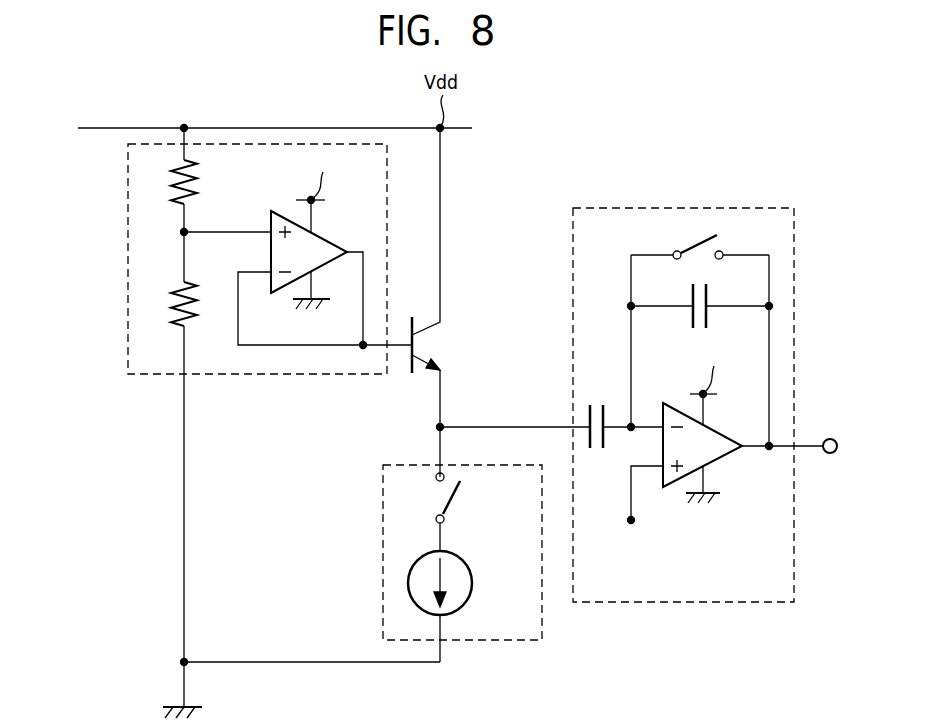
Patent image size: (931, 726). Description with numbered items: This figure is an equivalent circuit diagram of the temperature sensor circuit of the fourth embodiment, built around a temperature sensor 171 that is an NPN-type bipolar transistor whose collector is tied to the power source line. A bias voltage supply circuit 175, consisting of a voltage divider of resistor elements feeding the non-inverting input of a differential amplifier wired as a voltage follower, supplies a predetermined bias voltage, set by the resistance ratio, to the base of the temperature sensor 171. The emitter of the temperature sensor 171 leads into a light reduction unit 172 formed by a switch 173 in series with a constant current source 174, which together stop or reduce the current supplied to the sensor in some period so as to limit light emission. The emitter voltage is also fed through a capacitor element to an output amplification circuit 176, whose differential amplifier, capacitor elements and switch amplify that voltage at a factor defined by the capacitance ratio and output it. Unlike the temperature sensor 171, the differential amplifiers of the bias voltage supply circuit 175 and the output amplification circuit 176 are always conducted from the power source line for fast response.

The temperature sensor 171 is at (412, 373).
The light reduction unit 172 is at (420, 563).
The switch 173 is at (454, 495).
The constant current source 174 is at (466, 558).
The bias voltage supply circuit 175 is at (128, 213).
The output amplification circuit 176 is at (735, 208).